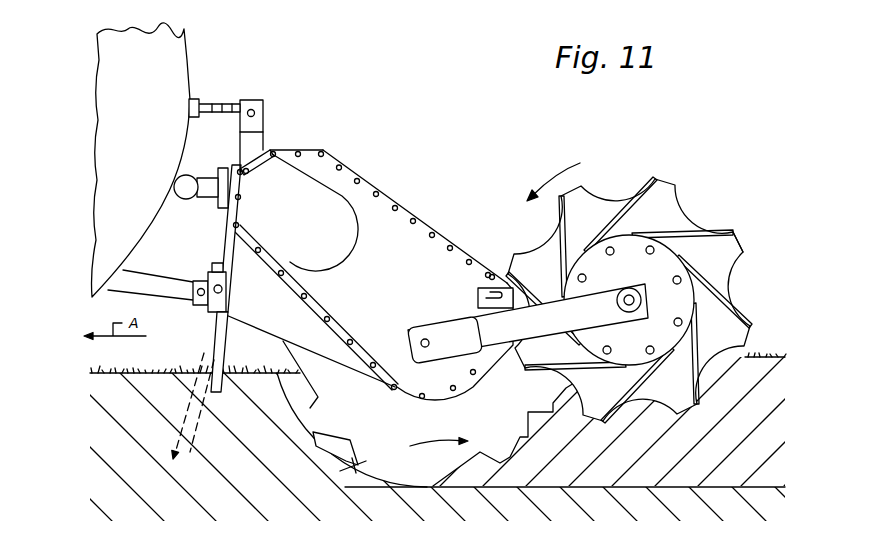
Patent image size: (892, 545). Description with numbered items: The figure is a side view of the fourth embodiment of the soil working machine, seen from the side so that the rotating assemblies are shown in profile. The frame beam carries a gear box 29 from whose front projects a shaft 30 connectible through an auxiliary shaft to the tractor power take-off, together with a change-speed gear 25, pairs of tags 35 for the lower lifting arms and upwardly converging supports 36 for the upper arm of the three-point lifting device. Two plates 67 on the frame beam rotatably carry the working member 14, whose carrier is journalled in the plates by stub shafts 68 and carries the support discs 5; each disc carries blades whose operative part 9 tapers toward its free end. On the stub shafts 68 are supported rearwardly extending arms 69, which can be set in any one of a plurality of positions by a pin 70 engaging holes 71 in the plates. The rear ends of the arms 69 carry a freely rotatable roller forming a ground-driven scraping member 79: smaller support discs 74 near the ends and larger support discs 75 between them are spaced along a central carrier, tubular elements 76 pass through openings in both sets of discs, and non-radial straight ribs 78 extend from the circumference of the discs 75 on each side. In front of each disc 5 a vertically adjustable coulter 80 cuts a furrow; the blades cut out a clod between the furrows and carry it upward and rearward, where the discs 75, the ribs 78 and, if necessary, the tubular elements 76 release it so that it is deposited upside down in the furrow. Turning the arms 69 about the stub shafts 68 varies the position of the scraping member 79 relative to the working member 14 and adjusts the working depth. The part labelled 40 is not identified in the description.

The support disc 5 is at (512, 428).
The operative part 9 is at (351, 433).
The working member 14 is at (357, 468).
The change-speed gear 25 is at (313, 183).
The gear box 29 is at (230, 166).
The shaft 30 is at (209, 203).
The tags 35 is at (208, 273).
The supports 36 is at (256, 146).
The support plate 40 is at (327, 294).
The plates 67 is at (396, 200).
The stub shafts 68 is at (425, 332).
The arms 69 is at (457, 341).
The pin 70 is at (490, 316).
The holes 71 is at (480, 290).
The support discs 74 is at (631, 246).
The support discs 75 is at (671, 193).
The tubular elements 76 is at (590, 278).
The ribs 78 is at (616, 215).
The scraping member 79 is at (719, 227).
The coulters 80 is at (213, 333).